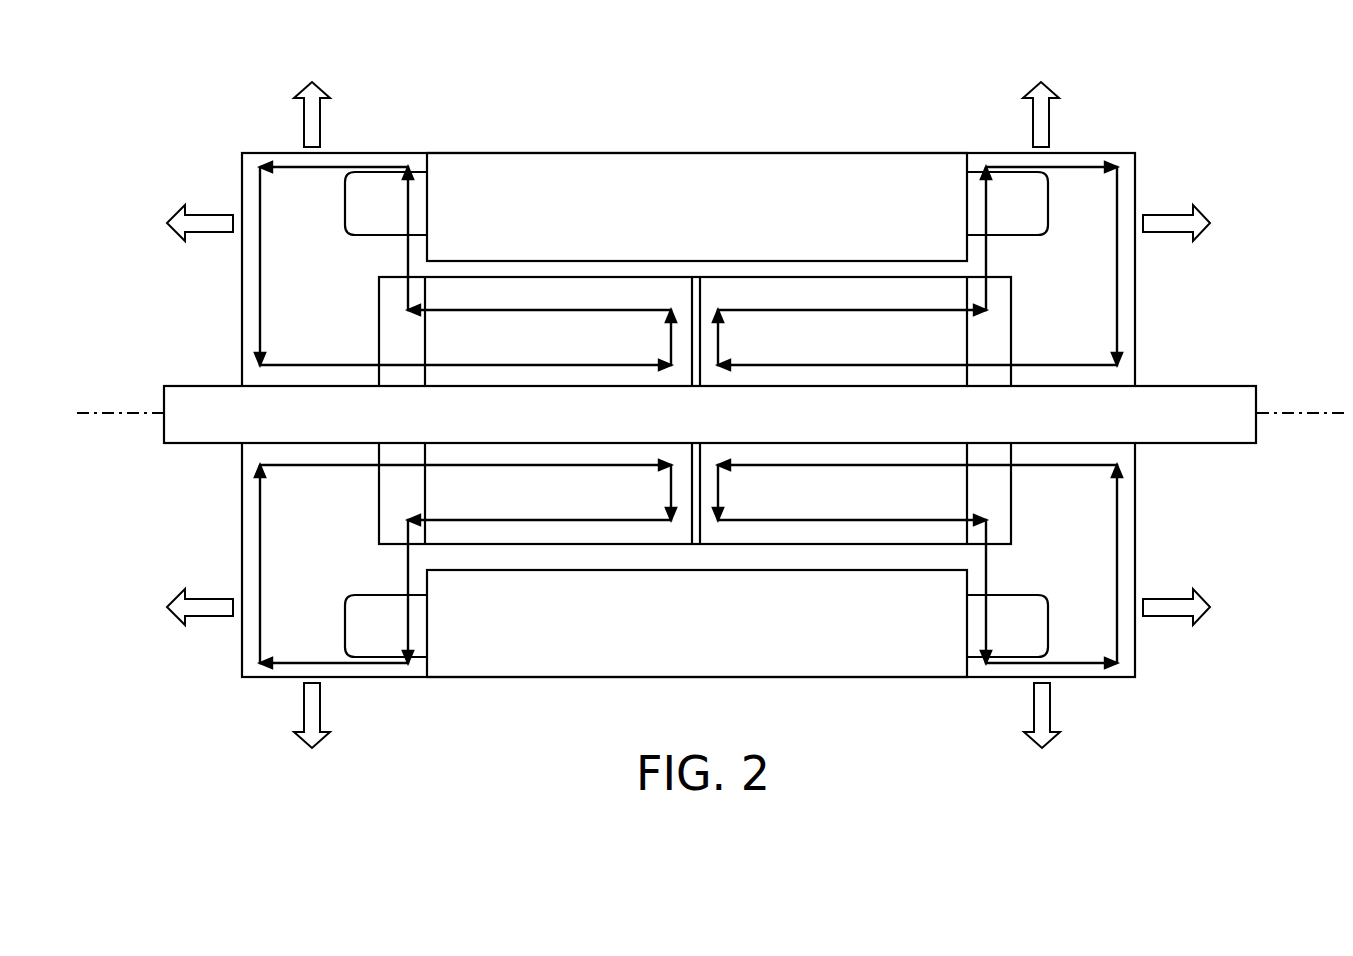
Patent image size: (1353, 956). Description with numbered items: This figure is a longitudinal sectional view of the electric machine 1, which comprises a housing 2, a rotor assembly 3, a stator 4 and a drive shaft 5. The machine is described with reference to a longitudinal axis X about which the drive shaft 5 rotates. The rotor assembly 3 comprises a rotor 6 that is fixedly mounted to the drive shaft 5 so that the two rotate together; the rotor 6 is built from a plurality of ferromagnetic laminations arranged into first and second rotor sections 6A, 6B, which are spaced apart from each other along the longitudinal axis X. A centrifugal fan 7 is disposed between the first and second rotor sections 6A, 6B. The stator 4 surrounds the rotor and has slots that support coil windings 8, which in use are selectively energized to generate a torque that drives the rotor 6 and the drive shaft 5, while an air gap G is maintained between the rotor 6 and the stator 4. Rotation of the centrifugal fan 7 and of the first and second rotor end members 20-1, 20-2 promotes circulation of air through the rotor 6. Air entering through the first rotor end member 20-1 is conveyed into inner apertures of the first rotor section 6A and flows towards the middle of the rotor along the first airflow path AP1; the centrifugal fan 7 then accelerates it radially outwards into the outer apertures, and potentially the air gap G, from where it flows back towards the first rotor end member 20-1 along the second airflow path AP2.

The electric machine 1 is at (1190, 127).
The housing 2 is at (1108, 152).
The rotor assembly 3 is at (731, 445).
The stator 4 is at (784, 171).
The drive shaft 5 is at (194, 444).
The rotor 6 is at (525, 503).
The first rotor section 6A is at (496, 348).
The second rotor section 6B is at (916, 348).
The centrifugal fan 7 is at (700, 545).
The coil windings 8 is at (1049, 205).
The first rotor end member 20-1 is at (392, 490).
The second rotor end member 20-2 is at (1000, 492).
The first airflow path AP1 is at (568, 337).
The second airflow path AP2 is at (568, 294).
The air gap G is at (593, 558).
The longitudinal axis X is at (701, 413).